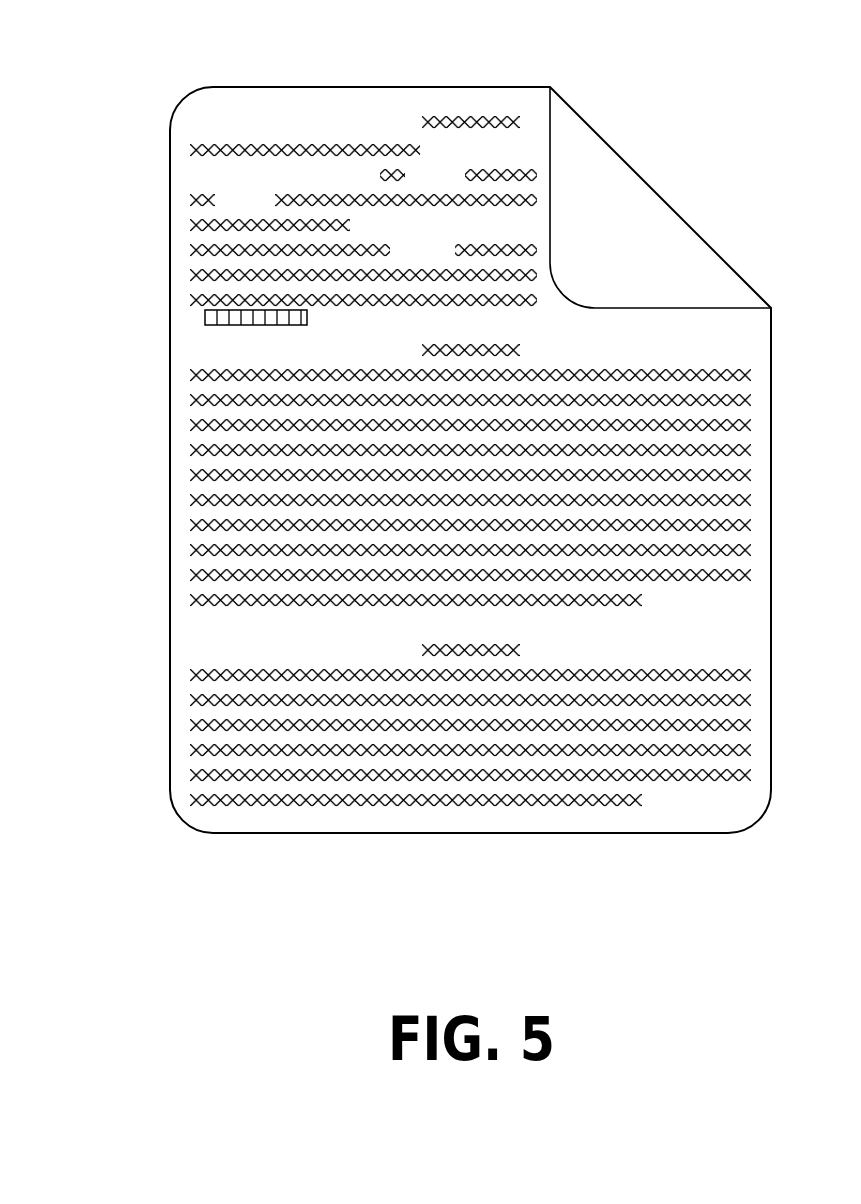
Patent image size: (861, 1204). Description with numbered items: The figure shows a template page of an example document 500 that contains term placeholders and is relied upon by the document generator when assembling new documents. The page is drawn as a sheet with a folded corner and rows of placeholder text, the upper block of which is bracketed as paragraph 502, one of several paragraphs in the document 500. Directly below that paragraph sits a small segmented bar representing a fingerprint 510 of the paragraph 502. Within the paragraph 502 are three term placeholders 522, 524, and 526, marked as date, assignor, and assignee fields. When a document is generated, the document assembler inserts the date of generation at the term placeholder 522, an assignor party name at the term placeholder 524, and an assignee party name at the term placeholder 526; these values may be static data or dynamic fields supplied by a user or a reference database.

The document 500 is at (219, 38).
The paragraph 502 is at (158, 303).
The fingerprint 510 is at (278, 326).
The term placeholder 522 is at (467, 165).
The term placeholder 524 is at (280, 189).
The term placeholder 526 is at (455, 239).